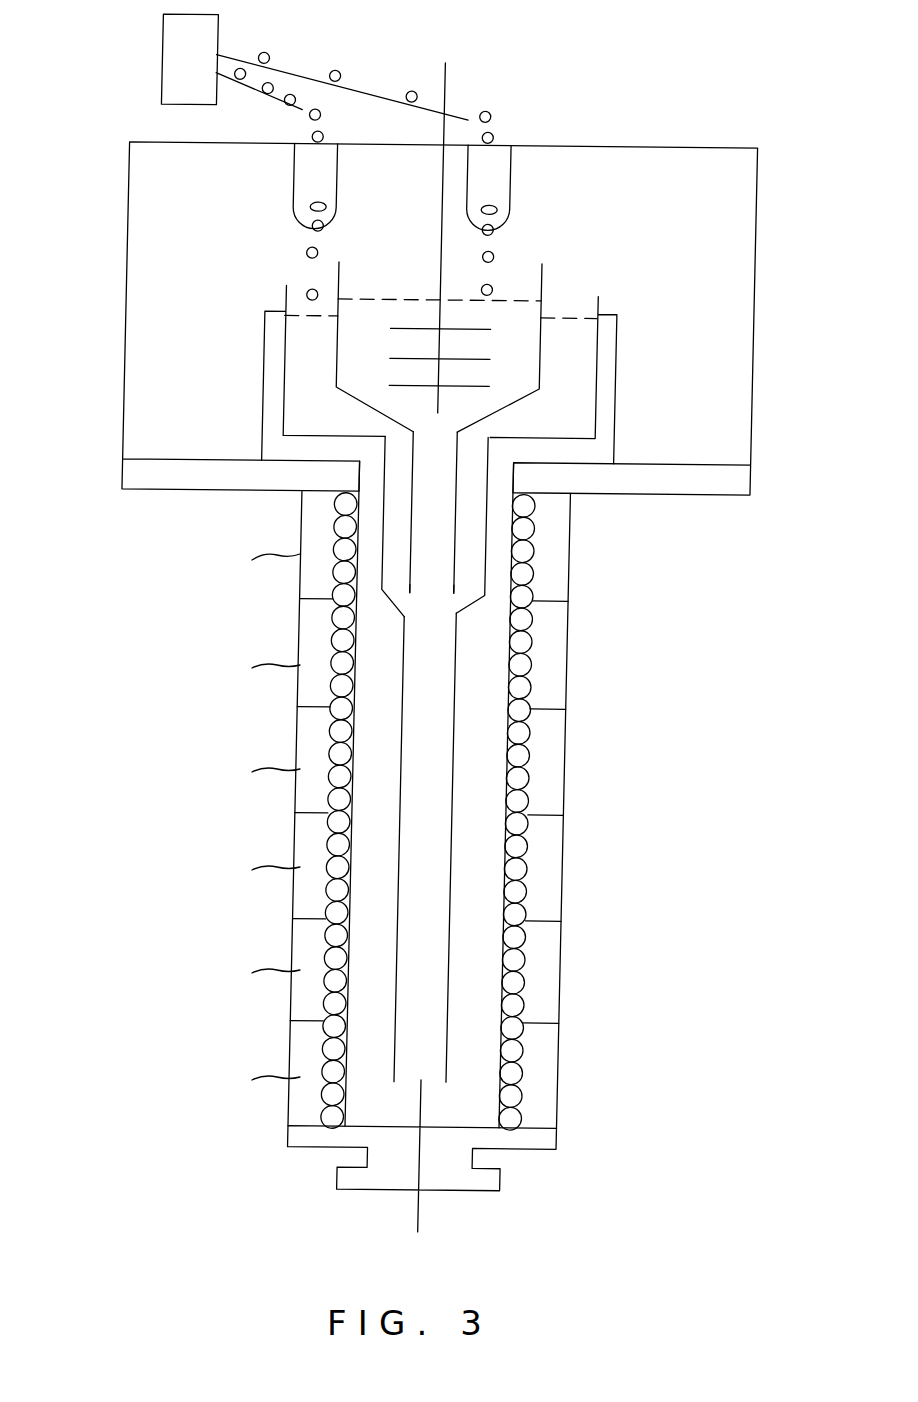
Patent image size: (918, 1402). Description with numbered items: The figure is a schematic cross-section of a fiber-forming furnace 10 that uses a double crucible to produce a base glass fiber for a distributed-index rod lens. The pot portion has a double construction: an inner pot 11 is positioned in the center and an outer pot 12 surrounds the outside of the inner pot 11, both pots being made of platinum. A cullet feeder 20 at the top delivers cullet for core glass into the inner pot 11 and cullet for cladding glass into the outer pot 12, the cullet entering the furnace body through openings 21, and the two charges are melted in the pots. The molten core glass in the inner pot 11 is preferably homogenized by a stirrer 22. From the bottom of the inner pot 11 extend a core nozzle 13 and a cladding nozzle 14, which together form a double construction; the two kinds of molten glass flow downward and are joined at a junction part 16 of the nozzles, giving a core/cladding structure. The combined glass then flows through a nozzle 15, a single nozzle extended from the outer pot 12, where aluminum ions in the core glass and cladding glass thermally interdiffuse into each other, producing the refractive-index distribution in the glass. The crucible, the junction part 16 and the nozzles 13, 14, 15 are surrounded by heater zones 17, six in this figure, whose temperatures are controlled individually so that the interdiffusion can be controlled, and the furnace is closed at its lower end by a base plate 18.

The fiber-forming furnace 10 is at (712, 412).
The inner pot 11 is at (335, 272).
The outer pot 12 is at (285, 350).
The core nozzle 13 is at (457, 522).
The cladding nozzle 14 is at (485, 565).
The nozzle 15 is at (453, 733).
The junction part 16 is at (438, 593).
The heater zones 17 is at (104, 1115).
The base plate 18 is at (540, 1145).
The cullet feeder 20 is at (217, 28).
The charging slot 21 is at (306, 181).
The stirrer 22 is at (447, 78).